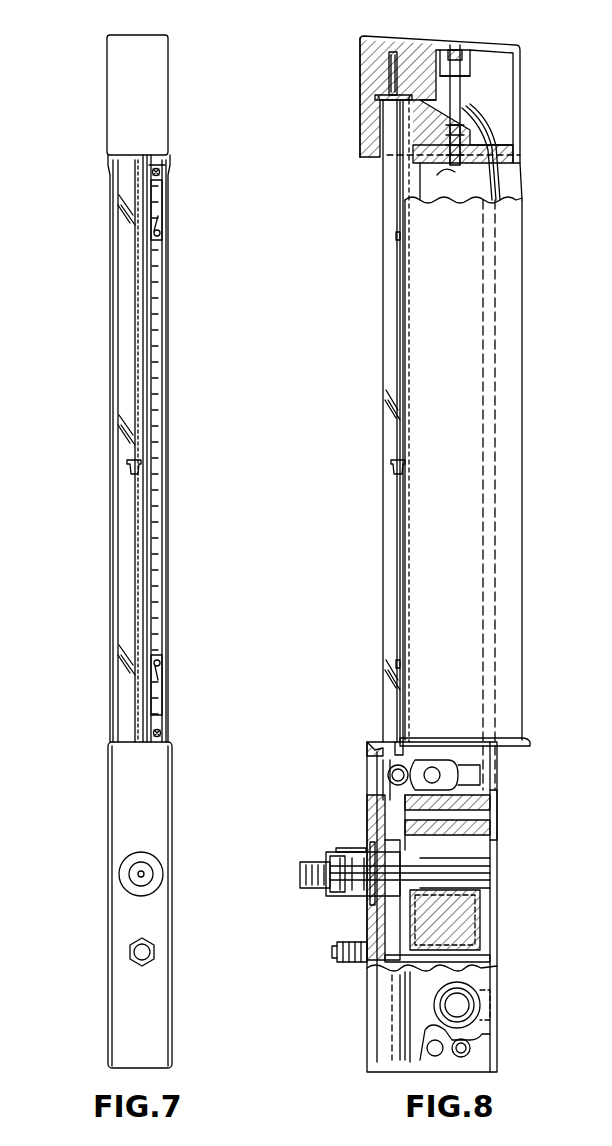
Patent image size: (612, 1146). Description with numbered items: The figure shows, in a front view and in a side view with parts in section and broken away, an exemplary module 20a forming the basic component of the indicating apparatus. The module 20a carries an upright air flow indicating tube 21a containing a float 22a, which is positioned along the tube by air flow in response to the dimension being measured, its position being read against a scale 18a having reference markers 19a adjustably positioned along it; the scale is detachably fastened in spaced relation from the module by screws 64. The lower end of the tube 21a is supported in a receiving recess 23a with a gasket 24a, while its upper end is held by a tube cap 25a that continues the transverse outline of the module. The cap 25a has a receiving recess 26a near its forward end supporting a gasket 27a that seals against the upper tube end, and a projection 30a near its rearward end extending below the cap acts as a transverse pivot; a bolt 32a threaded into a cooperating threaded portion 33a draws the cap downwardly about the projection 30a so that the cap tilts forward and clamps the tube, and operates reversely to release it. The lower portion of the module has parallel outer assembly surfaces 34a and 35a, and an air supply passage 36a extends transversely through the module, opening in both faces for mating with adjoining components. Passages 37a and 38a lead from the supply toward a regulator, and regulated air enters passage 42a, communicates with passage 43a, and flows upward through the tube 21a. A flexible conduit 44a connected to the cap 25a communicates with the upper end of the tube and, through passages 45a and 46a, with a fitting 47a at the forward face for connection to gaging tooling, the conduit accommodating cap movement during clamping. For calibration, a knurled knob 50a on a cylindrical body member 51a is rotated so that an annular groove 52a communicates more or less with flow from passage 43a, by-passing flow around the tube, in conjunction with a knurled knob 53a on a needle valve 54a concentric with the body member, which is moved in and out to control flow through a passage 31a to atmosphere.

In FIG. 7, the scale 18a is at (166, 512).
In FIG. 7, the reference marker 19a is at (163, 228).
In FIG. 8, the reference marker 19a is at (397, 234).
In FIG. 7, the module 20a is at (85, 80).
In FIG. 8, the module 20a is at (358, 195).
In FIG. 7, the air flow indicating tube 21a is at (128, 340).
In FIG. 8, the air flow indicating tube 21a is at (390, 381).
In FIG. 7, the float 22a is at (127, 468).
In FIG. 8, the float 22a is at (391, 467).
In FIG. 8, the receiving recess 23a is at (390, 768).
In FIG. 8, the gasket 24a is at (380, 752).
In FIG. 7, the tube cap 25a is at (160, 63).
In FIG. 8, the tube cap 25a is at (372, 38).
In FIG. 8, the receiving recess 26a is at (384, 93).
In FIG. 8, the gasket 27a is at (375, 98).
In FIG. 8, the projection 30a is at (522, 156).
In FIG. 8, the passage 31a is at (340, 892).
In FIG. 8, the bolt 32a is at (456, 96).
In FIG. 8, the threaded portion 33a is at (437, 176).
In FIG. 7, the outer assembly surface 34a is at (108, 800).
In FIG. 7, the outer assembly surface 35a is at (172, 806).
In FIG. 8, the outer assembly surface 35a is at (497, 1030).
In FIG. 8, the air supply passage 36a is at (476, 990).
In FIG. 8, the passage 37a is at (490, 998).
In FIG. 8, the passage 38a is at (500, 957).
In FIG. 8, the passage 42a is at (495, 826).
In FIG. 8, the passage 43a is at (487, 808).
In FIG. 8, the flexible conduit 44a is at (495, 497).
In FIG. 8, the passage 45a is at (492, 876).
In FIG. 8, the passage 46a is at (490, 957).
In FIG. 7, the fitting 47a is at (130, 952).
In FIG. 8, the fitting 47a is at (332, 951).
In FIG. 7, the knurled knob 50a is at (162, 868).
In FIG. 8, the knurled knob 50a is at (340, 852).
In FIG. 8, the cylindrical body member 51a is at (352, 848).
In FIG. 8, the annular groove 52a is at (390, 896).
In FIG. 7, the knurled knob 53a is at (128, 876).
In FIG. 8, the knurled knob 53a is at (302, 864).
In FIG. 8, the needle valve 54a is at (410, 880).
In FIG. 7, the screw 64 is at (160, 171).